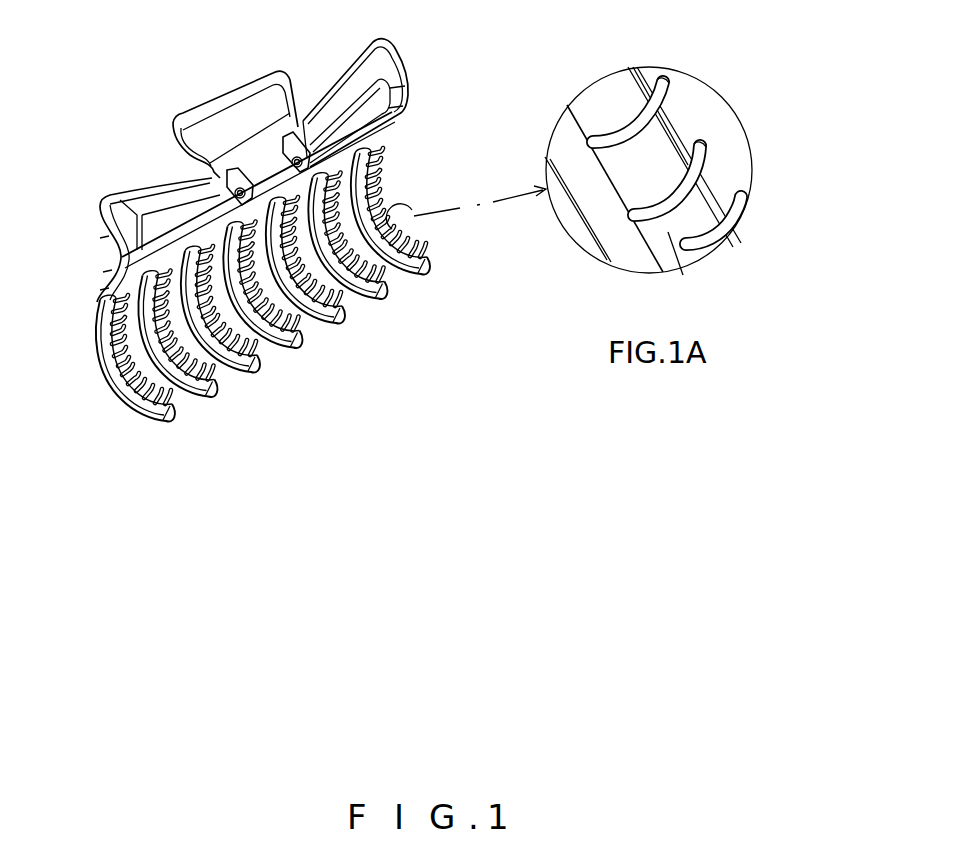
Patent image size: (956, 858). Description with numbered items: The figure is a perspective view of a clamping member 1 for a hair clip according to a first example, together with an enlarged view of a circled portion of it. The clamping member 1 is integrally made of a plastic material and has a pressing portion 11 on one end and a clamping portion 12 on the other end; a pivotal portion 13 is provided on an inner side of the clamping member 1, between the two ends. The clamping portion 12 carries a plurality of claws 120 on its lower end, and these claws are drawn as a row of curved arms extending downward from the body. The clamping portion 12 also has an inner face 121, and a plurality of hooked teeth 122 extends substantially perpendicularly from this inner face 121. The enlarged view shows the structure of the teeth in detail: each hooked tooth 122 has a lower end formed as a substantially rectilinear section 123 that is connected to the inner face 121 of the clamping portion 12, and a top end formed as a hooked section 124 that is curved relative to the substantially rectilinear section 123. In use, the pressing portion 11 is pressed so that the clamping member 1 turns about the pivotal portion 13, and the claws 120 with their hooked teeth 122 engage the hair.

In FIG. 1, the clamping member 1 is at (80, 252).
In FIG. 1, the pressing portion 11 is at (212, 113).
In FIG. 1, the clamping portion 12 is at (97, 345).
In FIG. 1A, the clamping portion 12 is at (691, 136).
In FIG. 1, the pivotal portion 13 is at (302, 138).
In FIG. 1, the claws 120 is at (119, 381).
In FIG. 1A, the claws 120 is at (618, 242).
In FIG. 1, the inner face 121 is at (113, 366).
In FIG. 1A, the inner face 121 is at (673, 238).
In FIG. 1, the hooked teeth 122 is at (125, 394).
In FIG. 1A, the hooked teeth 122 is at (723, 185).
In FIG. 1A, the substantially rectilinear section 123 is at (719, 196).
In FIG. 1A, the hooked section 124 is at (706, 140).